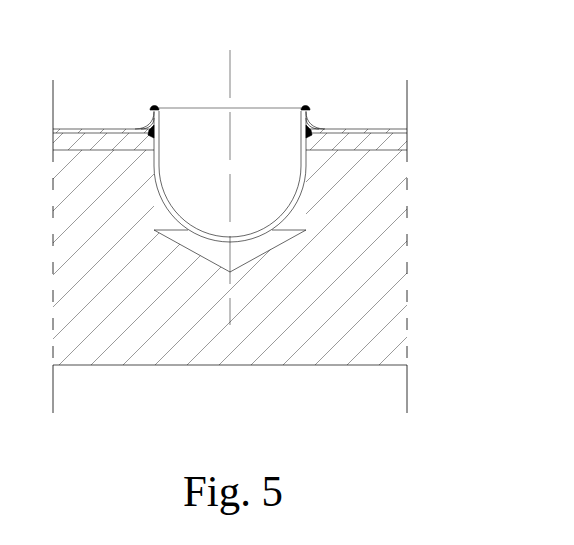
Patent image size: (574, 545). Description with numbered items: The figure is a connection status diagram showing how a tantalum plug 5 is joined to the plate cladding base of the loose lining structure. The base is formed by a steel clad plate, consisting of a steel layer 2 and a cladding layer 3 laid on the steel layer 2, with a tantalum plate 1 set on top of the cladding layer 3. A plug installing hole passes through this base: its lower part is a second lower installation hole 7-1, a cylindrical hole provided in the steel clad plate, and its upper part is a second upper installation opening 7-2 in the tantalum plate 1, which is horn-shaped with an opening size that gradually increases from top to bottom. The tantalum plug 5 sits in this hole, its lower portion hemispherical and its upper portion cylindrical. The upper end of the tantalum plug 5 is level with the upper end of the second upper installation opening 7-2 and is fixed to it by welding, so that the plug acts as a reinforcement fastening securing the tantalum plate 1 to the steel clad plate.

The tantalum plate 1 is at (370, 130).
The steel layer 2 is at (385, 278).
The cladding layer 3 is at (103, 143).
The tantalum plug 5 is at (161, 106).
The second lower installation hole 7-1 is at (297, 216).
The second upper installation opening 7-2 is at (313, 123).